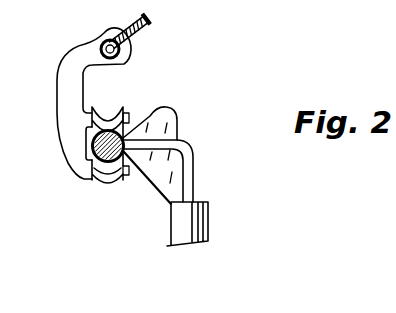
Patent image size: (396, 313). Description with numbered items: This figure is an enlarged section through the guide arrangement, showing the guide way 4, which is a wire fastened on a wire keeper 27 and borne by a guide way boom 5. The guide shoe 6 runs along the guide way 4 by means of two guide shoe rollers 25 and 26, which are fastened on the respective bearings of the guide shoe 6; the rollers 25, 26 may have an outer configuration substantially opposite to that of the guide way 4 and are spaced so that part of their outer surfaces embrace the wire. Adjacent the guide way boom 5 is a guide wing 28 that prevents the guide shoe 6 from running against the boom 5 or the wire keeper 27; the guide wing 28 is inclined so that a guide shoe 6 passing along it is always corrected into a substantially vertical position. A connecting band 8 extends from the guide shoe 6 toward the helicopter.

The guide way 4 is at (92, 146).
The guide way boom 5 is at (197, 224).
The guide shoe 6 is at (62, 83).
The connecting band 8 is at (129, 22).
The guide shoe roller 25 is at (108, 114).
The guide shoe roller 26 is at (103, 180).
The wire keeper 27 is at (189, 152).
The guide wing 28 is at (163, 120).